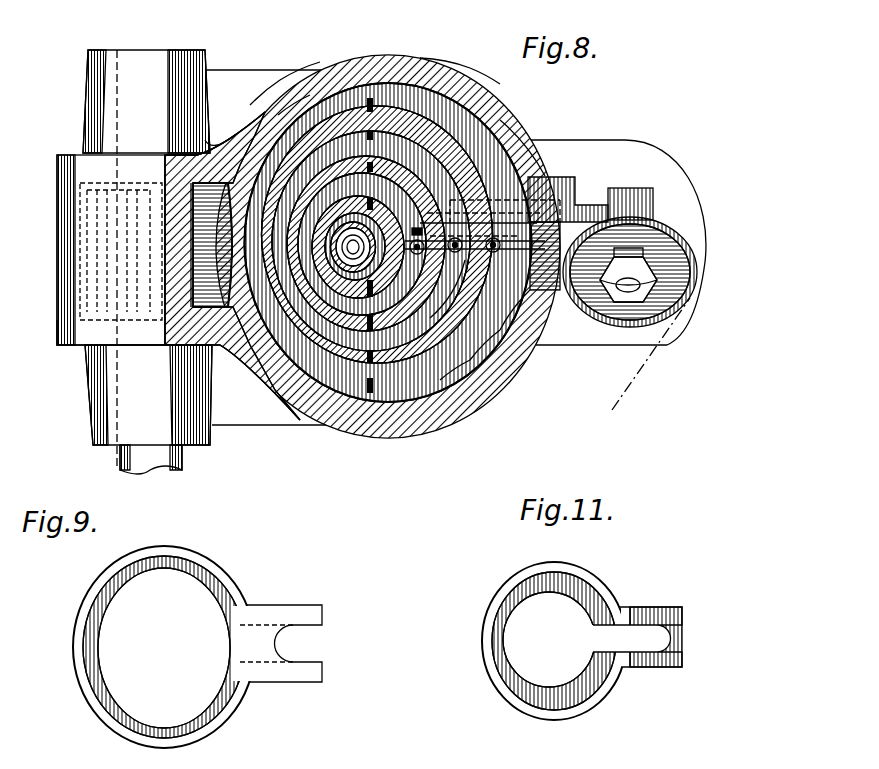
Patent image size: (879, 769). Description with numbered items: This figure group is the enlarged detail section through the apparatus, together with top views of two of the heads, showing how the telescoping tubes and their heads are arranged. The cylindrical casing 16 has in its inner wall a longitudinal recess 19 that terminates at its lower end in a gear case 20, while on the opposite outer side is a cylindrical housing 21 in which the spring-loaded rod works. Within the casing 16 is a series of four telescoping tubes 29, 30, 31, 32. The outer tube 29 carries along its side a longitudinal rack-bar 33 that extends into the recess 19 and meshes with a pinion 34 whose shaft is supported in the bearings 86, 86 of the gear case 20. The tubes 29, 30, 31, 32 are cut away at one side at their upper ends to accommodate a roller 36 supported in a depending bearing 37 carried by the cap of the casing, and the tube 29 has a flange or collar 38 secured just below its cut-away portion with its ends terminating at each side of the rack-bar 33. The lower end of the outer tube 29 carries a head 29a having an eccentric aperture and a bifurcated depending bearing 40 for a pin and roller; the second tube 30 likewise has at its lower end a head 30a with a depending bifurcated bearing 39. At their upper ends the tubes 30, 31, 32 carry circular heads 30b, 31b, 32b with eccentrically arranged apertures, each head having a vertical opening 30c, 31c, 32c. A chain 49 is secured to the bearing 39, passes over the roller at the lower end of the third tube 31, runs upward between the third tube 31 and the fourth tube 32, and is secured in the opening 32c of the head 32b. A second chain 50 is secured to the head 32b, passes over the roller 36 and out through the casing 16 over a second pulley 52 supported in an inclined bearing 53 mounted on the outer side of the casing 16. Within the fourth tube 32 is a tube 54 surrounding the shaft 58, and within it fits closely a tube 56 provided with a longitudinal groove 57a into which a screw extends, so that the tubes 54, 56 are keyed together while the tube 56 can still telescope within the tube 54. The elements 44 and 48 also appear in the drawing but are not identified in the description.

In FIG. 8, the cylindrical casing 16 is at (328, 425).
In FIG. 8, the longitudinal recess 19 is at (220, 358).
In FIG. 8, the gear case 20 is at (57, 253).
In FIG. 8, the cylindrical housing 21 is at (665, 180).
In FIG. 8, the outer tube 29 is at (317, 393).
In FIG. 8, the second tube 30 is at (290, 407).
In FIG. 8, the third tube 31 is at (258, 410).
In FIG. 8, the fourth tube 32 is at (233, 413).
In FIG. 8, the rack-bar 33 is at (212, 245).
In FIG. 8, the pinion 34 is at (57, 336).
In FIG. 8, the roller 36 is at (540, 200).
In FIG. 8, the depending bearing 37 is at (516, 160).
In FIG. 8, the flange or collar 38 is at (403, 396).
In FIG. 8, the arm 44 is at (548, 140).
In FIG. 8, the rim portion 48 is at (487, 120).
In FIG. 8, the chain 49 is at (456, 98).
In FIG. 8, the chain 50 is at (660, 350).
In FIG. 8, the second pulley 52 is at (680, 288).
In FIG. 8, the inclined bearing 53 is at (600, 210).
In FIG. 8, the tube 54 is at (253, 103).
In FIG. 8, the tube 56 is at (262, 80).
In FIG. 8, the longitudinal groove 57a is at (182, 190).
In FIG. 8, the shaft 58 is at (293, 110).
In FIG. 8, the bearings 86 is at (147, 262).
In FIG. 8, the circular head 30b is at (445, 300).
In FIG. 8, the circular head 31b is at (420, 282).
In FIG. 8, the head 32b is at (362, 244).
In FIG. 8, the vertical opening 30c is at (555, 312).
In FIG. 8, the vertical opening 31c is at (530, 342).
In FIG. 8, the vertical opening 32c is at (492, 352).
In FIG. 9, the head 29a is at (73, 647).
In FIG. 9, the bifurcated depending bearing 40 is at (300, 682).
In FIG. 11, the head 30a is at (482, 637).
In FIG. 11, the depending bifurcated bearing 39 is at (668, 634).